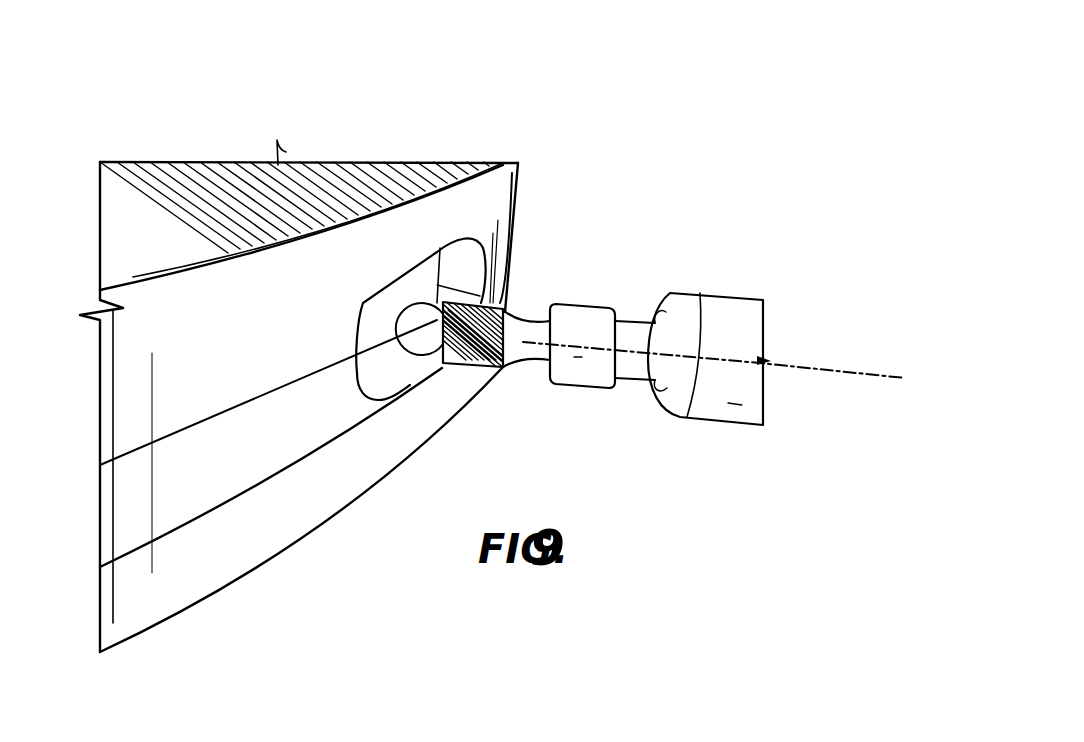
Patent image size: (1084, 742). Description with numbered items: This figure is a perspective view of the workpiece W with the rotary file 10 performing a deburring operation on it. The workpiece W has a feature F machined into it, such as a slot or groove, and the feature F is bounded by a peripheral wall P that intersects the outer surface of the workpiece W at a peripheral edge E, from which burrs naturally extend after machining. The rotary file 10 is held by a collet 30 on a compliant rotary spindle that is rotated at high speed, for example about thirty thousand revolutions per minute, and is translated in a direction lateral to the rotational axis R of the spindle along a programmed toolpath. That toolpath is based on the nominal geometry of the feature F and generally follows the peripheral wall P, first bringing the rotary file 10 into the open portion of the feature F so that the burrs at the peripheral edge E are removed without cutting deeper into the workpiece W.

The workpiece W is at (553, 166).
The peripheral wall P is at (462, 260).
The rotary file 10 is at (543, 287).
The collet 30 is at (587, 318).
The rotational axis R is at (827, 369).
The peripheral edge E is at (398, 385).
The feature F is at (340, 403).